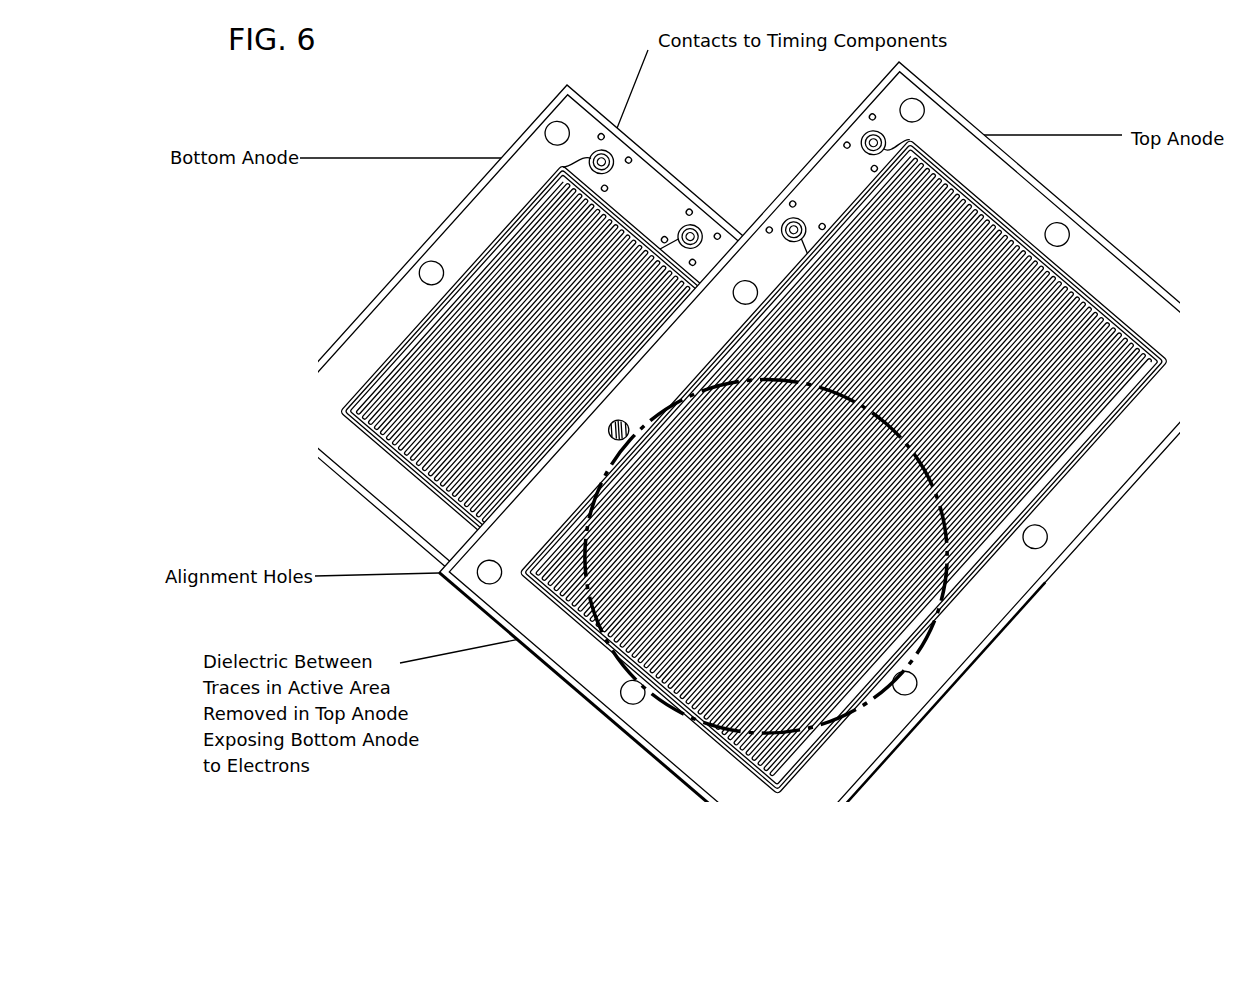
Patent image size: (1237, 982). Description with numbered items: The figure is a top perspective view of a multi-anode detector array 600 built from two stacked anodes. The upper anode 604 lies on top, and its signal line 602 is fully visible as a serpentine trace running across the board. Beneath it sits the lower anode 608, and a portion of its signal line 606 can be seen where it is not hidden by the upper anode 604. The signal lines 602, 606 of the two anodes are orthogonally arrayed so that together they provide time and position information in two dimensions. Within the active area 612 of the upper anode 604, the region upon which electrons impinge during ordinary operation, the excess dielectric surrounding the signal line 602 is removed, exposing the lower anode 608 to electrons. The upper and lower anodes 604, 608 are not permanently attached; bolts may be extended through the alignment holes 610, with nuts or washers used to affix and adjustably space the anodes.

The multi-anode detector array 600 is at (452, 137).
The signal line 602 is at (774, 791).
The upper anode 604 is at (831, 170).
The signal line 606 is at (317, 418).
The lower anode 608 is at (655, 192).
The alignment holes 610 is at (633, 708).
The active area 612 is at (613, 654).